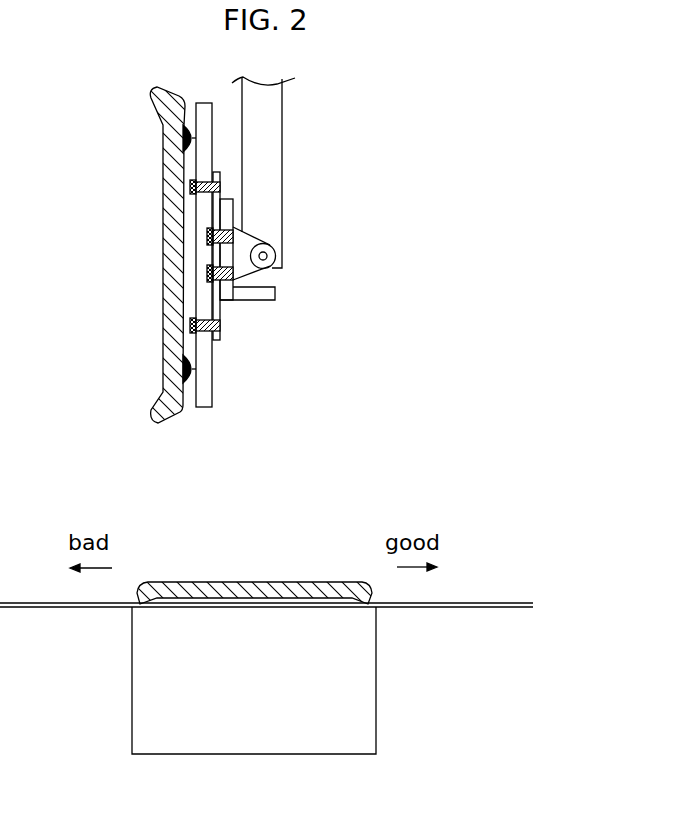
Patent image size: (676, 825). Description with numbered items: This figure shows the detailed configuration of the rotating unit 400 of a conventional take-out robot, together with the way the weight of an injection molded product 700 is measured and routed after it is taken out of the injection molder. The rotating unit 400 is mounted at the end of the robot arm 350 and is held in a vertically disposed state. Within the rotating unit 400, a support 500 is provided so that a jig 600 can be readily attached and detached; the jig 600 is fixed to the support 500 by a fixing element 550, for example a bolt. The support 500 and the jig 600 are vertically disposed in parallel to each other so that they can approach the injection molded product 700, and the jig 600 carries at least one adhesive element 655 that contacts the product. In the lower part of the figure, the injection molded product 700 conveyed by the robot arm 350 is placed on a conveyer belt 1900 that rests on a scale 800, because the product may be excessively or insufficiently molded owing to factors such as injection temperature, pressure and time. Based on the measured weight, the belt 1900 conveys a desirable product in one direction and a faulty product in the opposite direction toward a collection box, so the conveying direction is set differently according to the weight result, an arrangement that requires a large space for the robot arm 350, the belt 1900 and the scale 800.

The robot arm 350 is at (275, 194).
The rotating unit 400 is at (268, 293).
The support 500 is at (220, 336).
The fixing element 550 is at (218, 323).
The jig 600 is at (208, 390).
The adhesive element 655 is at (190, 371).
The injection molded product 700 is at (160, 410).
The scale 800 is at (367, 705).
The belt 1900 is at (480, 604).